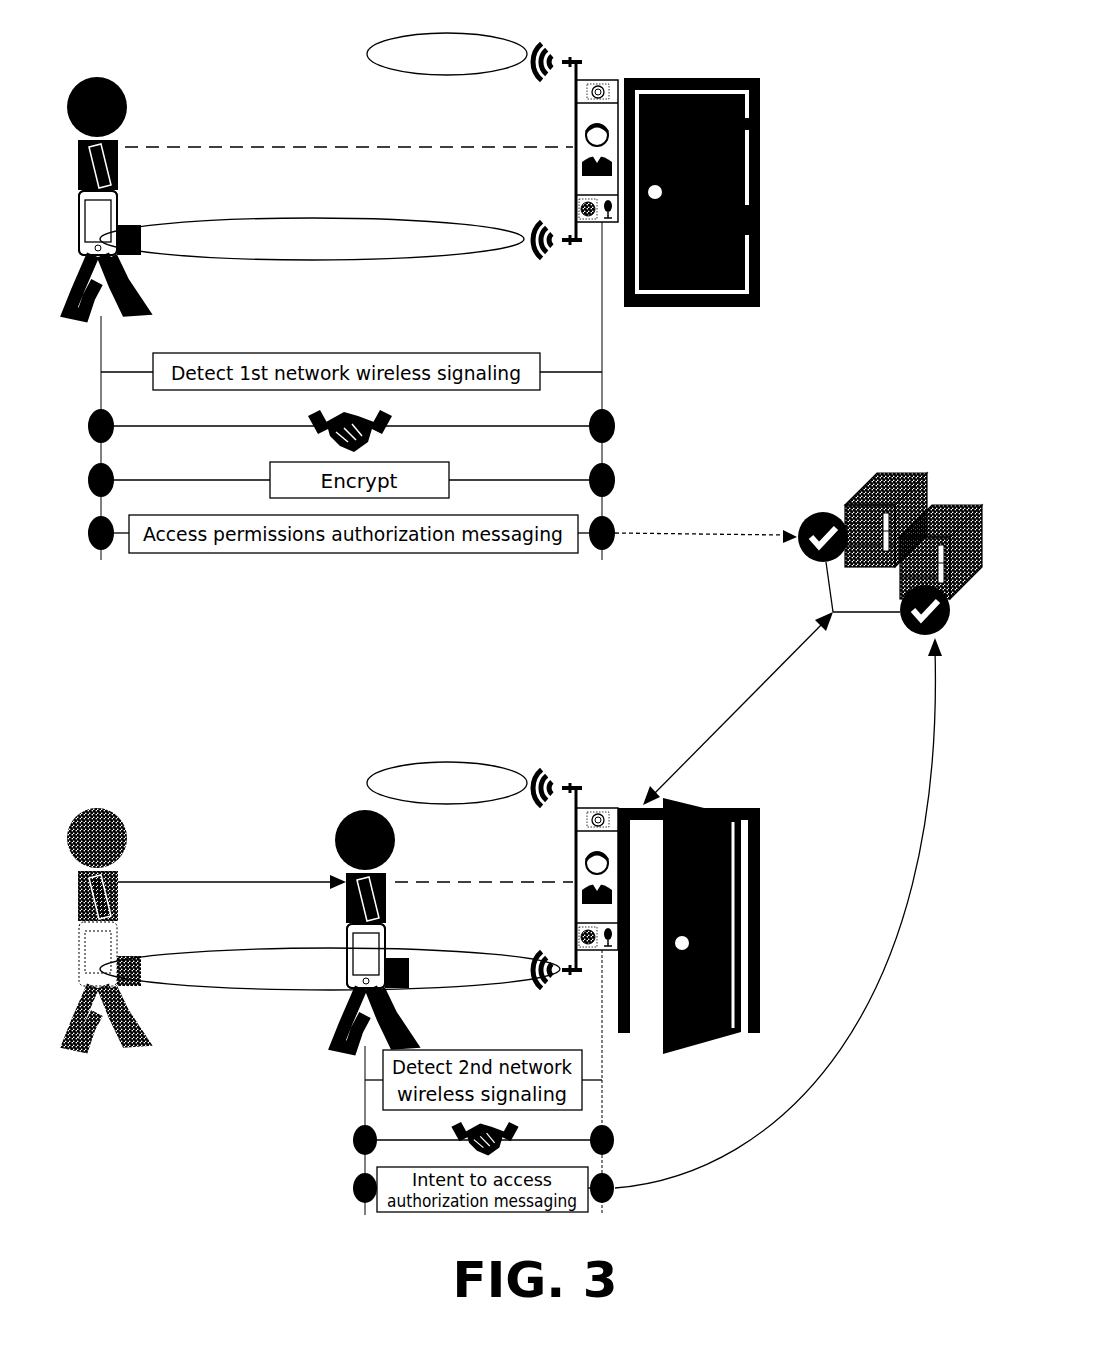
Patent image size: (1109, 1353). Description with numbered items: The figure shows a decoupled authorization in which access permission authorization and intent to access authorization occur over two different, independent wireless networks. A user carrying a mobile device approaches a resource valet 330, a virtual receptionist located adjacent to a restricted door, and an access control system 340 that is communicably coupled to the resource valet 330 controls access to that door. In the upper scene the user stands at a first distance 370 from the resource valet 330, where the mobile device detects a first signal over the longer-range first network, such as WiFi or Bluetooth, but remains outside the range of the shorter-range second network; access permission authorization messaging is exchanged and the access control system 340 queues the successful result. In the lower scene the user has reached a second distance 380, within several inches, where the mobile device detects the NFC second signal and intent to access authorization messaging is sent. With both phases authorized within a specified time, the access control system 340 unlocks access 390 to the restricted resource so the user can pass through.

The resource valet 330 is at (601, 80).
The access control system 340 is at (925, 502).
The first distance 370 is at (377, 147).
The second distance 380 is at (470, 882).
The unlocking access 390 is at (720, 723).